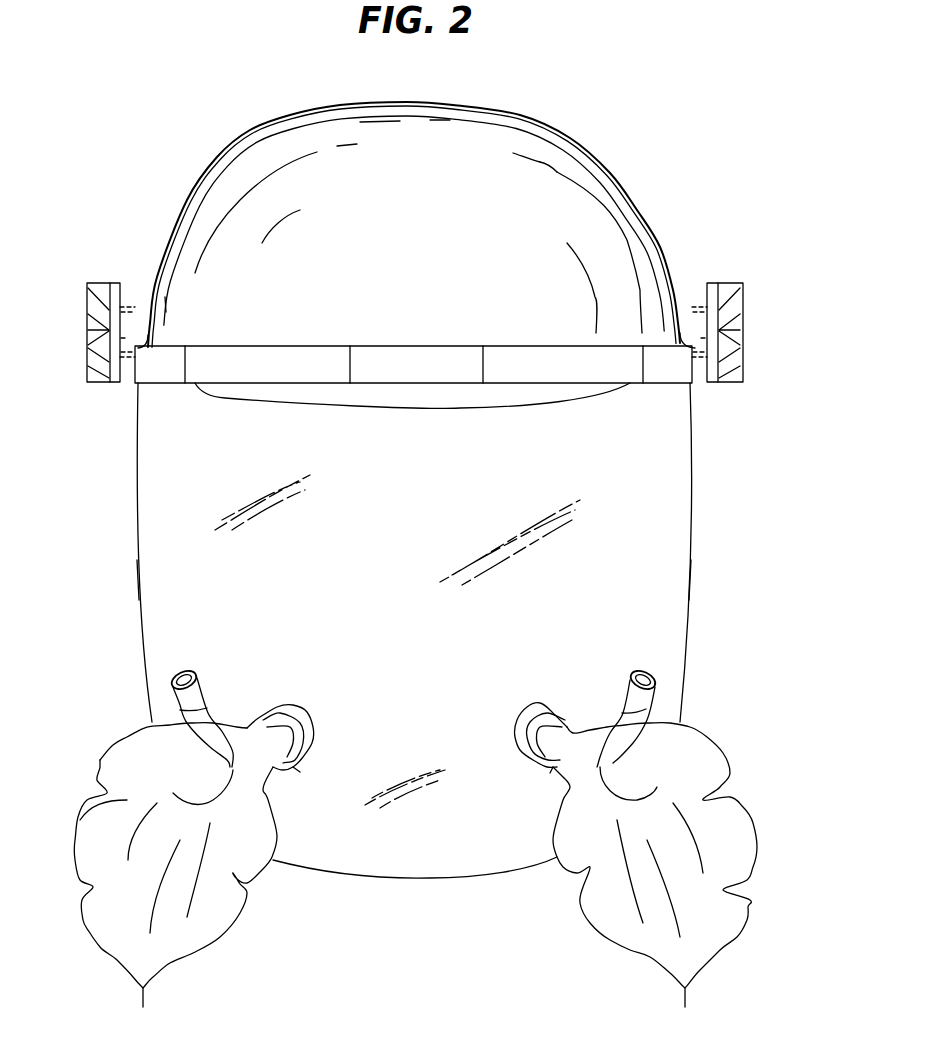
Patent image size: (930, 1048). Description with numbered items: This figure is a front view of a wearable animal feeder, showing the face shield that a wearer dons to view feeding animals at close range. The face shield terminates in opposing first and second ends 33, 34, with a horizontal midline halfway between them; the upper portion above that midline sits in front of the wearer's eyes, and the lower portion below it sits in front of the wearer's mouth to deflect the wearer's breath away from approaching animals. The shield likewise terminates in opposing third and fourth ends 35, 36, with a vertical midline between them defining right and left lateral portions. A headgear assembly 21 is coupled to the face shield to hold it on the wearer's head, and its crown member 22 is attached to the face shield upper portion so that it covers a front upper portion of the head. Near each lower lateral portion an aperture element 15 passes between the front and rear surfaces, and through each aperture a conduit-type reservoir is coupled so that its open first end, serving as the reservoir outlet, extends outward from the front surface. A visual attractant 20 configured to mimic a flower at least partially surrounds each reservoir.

The headgear assembly 21 is at (566, 88).
The crown member 22 is at (593, 193).
The face shield first end 33 is at (233, 400).
The face shield third end 35 is at (138, 603).
The face shield fourth end 36 is at (691, 607).
The face shield second end 34 is at (373, 880).
The visual attractant 20 is at (128, 933).
The aperture element 15 is at (300, 772).